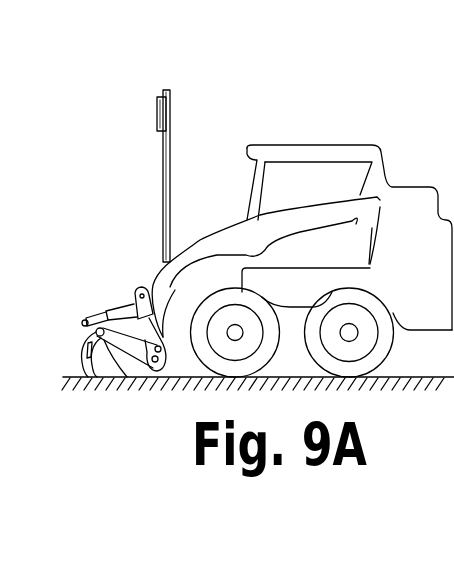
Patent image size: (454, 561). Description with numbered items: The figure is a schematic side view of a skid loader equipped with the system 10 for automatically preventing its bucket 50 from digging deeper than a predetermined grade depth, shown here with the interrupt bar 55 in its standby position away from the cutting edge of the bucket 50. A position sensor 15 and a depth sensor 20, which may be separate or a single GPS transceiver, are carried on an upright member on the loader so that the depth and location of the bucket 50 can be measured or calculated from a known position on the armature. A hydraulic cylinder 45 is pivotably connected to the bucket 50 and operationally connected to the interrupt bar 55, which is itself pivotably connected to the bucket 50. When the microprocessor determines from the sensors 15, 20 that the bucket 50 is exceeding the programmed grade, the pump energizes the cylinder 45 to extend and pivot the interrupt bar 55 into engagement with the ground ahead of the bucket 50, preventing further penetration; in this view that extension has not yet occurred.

The system 10 is at (103, 268).
The position sensor 15 is at (158, 106).
The depth sensor 20 is at (161, 114).
The hydraulic cylinder 45 is at (114, 306).
The bucket 50 is at (95, 366).
The interrupt bar 55 is at (153, 378).